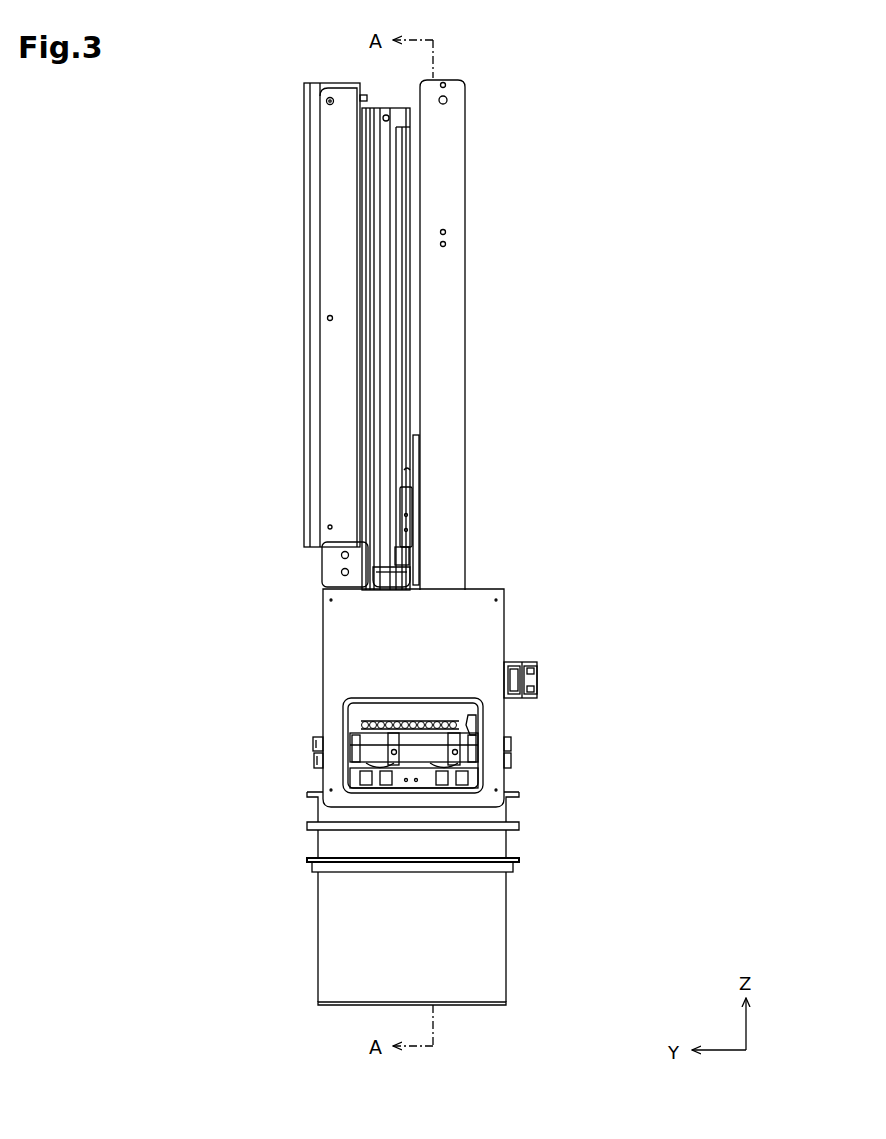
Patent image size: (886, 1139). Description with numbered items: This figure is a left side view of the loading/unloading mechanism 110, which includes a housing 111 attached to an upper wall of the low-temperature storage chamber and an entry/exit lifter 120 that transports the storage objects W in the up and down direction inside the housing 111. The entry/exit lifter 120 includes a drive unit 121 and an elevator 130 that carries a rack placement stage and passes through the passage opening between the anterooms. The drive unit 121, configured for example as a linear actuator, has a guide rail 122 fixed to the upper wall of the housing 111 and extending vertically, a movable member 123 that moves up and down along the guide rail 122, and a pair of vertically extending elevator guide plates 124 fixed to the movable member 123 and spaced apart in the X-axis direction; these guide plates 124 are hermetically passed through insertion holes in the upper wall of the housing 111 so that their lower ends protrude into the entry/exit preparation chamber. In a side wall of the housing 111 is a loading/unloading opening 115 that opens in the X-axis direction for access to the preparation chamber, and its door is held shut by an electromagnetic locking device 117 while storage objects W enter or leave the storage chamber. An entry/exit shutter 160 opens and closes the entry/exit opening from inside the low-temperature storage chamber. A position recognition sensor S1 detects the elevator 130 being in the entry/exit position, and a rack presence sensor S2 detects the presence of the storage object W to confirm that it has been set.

The loading/unloading mechanism 110 is at (735, 887).
The housing 111 is at (490, 912).
The loading/unloading opening 115 is at (345, 715).
The electromagnetic locking device 117 is at (522, 660).
The entry/exit lifter 120 is at (678, 740).
The drive unit 121 is at (620, 130).
The guide rail 122 is at (402, 324).
The movable member 123 is at (410, 500).
The elevator guide plates 124 is at (465, 195).
The elevator 130 is at (480, 724).
The entry/exit shutter 160 is at (350, 1005).
The storage objects W is at (405, 718).
The position recognition sensor S1 is at (318, 763).
The rack presence sensor S2 is at (313, 745).